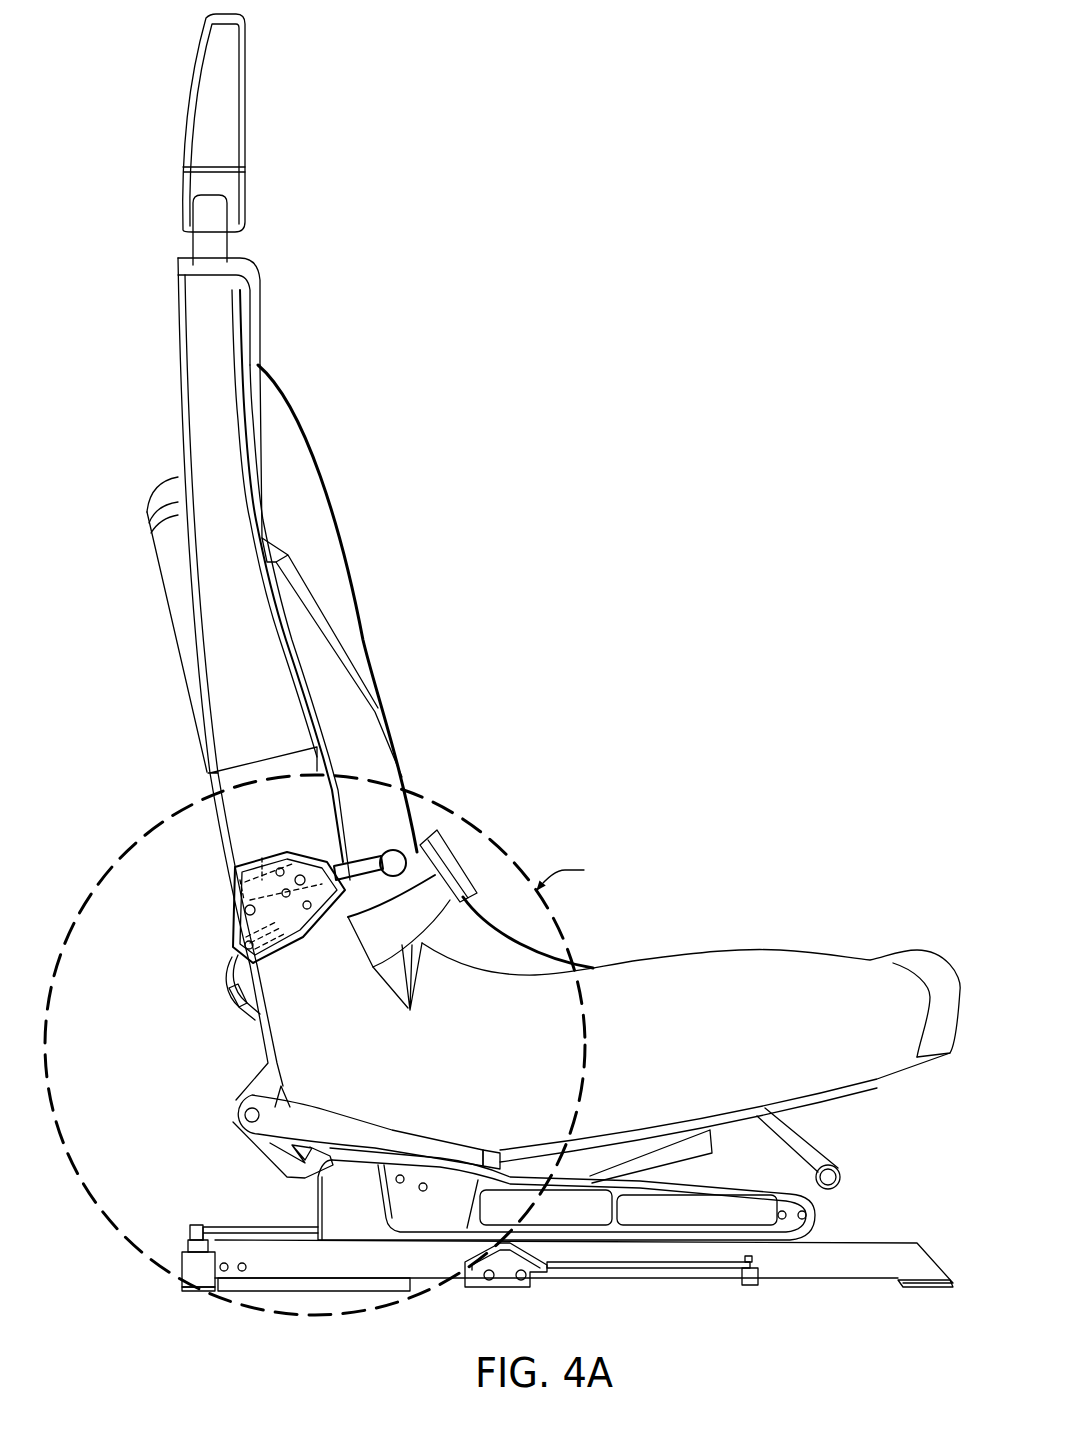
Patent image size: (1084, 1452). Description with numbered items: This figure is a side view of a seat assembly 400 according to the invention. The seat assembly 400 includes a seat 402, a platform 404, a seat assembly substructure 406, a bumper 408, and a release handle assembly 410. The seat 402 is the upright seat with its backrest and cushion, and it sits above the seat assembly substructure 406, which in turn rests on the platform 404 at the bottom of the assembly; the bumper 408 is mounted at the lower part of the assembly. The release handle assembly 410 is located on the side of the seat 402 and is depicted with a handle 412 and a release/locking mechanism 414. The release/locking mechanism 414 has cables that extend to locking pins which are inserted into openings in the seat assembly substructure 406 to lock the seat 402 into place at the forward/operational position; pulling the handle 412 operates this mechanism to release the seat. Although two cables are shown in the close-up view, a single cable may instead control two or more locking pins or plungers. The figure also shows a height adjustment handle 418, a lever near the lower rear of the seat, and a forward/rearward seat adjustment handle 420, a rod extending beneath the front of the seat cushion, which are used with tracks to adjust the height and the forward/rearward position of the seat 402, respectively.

The seat assembly 400 is at (502, 678).
The seat 402 is at (178, 412).
The platform 404 is at (878, 1245).
The seat assembly substructure 406 is at (658, 1280).
The bumper 408 is at (500, 1290).
The release handle assembly 410 is at (222, 897).
The handle 412 is at (365, 855).
The release/locking mechanism 414 is at (230, 934).
The height adjustment handle 418 is at (308, 1105).
The forward/rearward seat adjustment handle 420 is at (832, 1158).